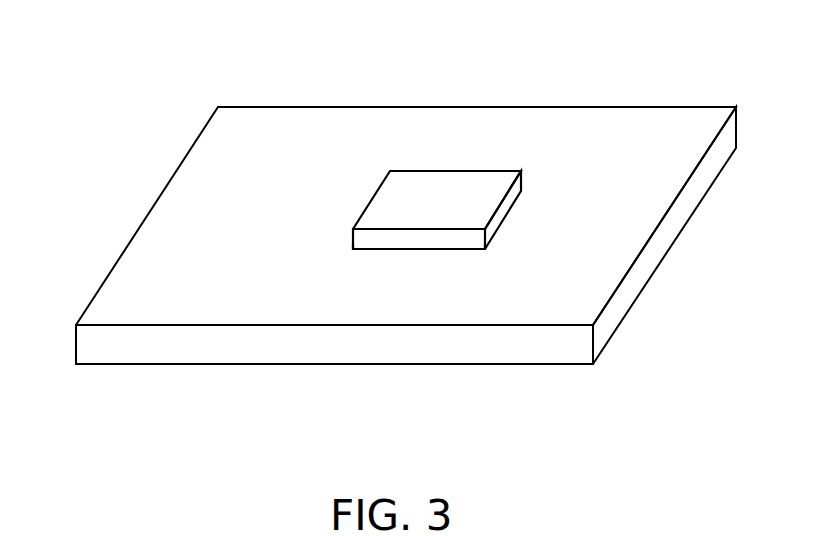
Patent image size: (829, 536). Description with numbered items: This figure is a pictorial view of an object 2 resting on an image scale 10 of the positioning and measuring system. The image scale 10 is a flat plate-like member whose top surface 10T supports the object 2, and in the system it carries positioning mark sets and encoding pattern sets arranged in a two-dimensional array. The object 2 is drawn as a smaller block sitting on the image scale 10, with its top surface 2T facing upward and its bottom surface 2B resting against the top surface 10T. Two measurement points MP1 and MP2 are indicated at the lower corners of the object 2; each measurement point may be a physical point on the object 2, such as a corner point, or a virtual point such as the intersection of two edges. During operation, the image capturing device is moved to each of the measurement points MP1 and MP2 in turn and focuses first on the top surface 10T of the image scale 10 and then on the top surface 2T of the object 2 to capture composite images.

The image scale 10 is at (550, 106).
The top surface of image scale 10T is at (167, 232).
The object 2 is at (443, 168).
The top surface of object 2T is at (402, 204).
The bottom surface of chip 2B is at (420, 250).
The measurement point MP1 is at (352, 250).
The measurement point MP2 is at (484, 250).